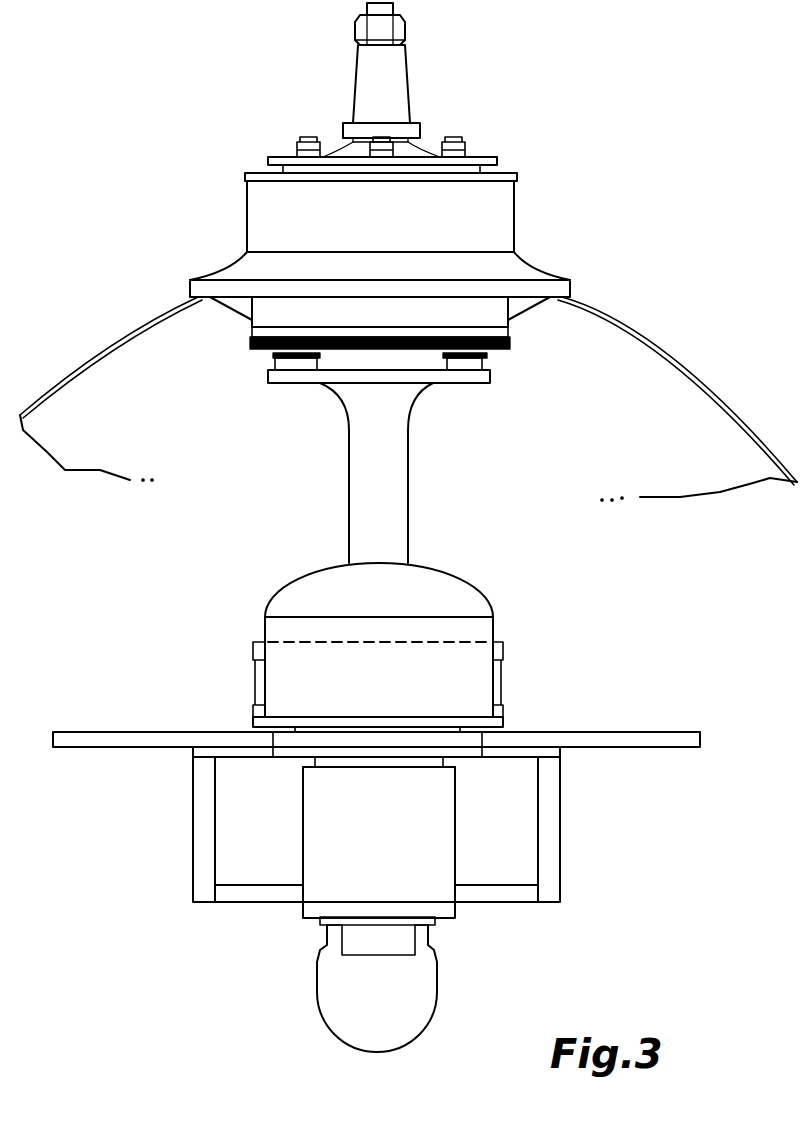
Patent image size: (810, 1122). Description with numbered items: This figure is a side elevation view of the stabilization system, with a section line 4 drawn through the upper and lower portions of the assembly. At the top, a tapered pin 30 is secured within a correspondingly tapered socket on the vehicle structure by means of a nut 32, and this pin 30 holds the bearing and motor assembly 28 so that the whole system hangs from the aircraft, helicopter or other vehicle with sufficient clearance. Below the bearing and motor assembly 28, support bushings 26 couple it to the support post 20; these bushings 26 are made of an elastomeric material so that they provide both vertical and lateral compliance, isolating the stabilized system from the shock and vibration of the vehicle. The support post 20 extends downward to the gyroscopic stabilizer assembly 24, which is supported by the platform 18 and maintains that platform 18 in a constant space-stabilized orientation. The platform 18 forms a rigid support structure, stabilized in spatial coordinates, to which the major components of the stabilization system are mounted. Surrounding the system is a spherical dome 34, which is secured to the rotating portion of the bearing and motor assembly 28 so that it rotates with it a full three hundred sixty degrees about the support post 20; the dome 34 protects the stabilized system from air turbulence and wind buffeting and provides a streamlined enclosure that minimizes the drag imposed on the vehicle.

The platform 18 is at (203, 808).
The support post 20 is at (408, 447).
The gyroscopic stabilizer assembly 24 is at (480, 605).
The support bushings 26 is at (488, 363).
The bearing and motor assembly 28 is at (515, 193).
The tapered pin 30 is at (410, 88).
The nut 32 is at (405, 30).
The dome 34 is at (720, 398).
The section line 4- 4 is at (380, 583).